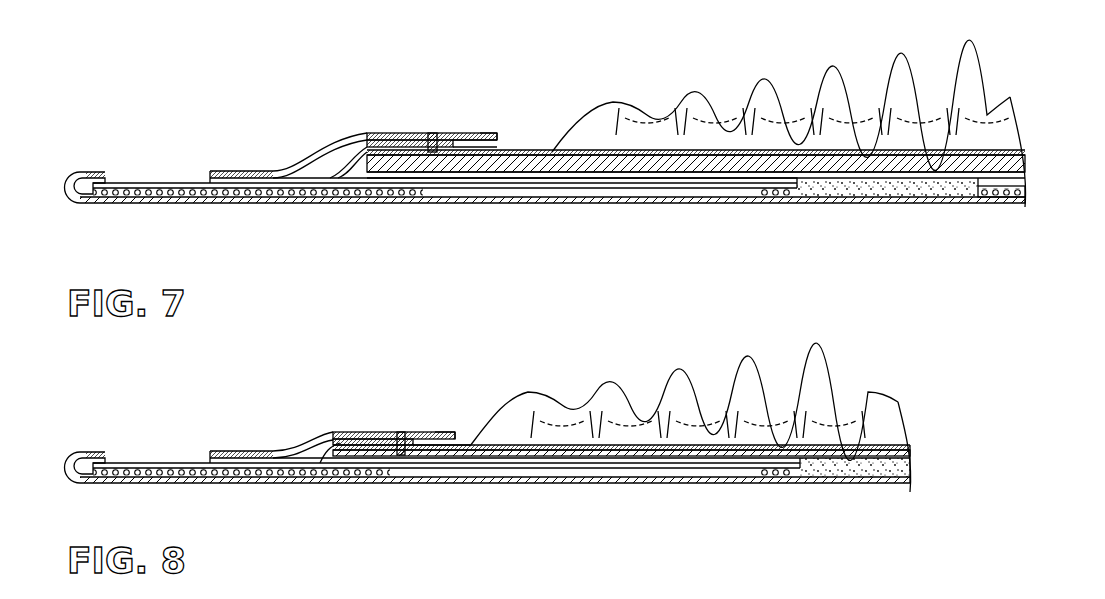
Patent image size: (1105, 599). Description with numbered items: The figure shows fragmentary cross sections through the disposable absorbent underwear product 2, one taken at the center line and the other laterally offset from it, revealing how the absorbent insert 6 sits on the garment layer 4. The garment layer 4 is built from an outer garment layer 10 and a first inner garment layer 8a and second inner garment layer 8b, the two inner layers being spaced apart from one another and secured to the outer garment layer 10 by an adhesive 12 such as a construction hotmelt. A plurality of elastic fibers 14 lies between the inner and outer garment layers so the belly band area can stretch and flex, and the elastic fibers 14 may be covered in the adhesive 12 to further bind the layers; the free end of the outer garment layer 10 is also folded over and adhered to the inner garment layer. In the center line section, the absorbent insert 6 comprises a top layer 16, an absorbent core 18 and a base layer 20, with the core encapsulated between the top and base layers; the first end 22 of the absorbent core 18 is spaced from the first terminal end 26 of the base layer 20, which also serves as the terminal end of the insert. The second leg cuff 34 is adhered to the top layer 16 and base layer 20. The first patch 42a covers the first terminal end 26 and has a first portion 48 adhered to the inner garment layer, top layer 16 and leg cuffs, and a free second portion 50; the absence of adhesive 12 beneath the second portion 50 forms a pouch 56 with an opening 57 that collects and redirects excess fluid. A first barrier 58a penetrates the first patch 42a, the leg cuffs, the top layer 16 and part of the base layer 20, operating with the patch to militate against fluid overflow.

In FIG. 7, the disposable absorbent underwear product 2 is at (153, 167).
In FIG. 8, the disposable absorbent underwear product 2 is at (153, 450).
In FIG. 7, the garment layer 4 is at (822, 202).
In FIG. 8, the garment layer 4 is at (668, 486).
In FIG. 7, the absorbent insert 6 is at (948, 98).
In FIG. 8, the absorbent insert 6 is at (836, 395).
In FIG. 7, the first inner garment layer 8a is at (132, 182).
In FIG. 8, the first inner garment layer 8a is at (132, 462).
In FIG. 7, the second inner garment layer 8b is at (1026, 184).
In FIG. 7, the outer garment layer 10 is at (131, 204).
In FIG. 8, the outer garment layer 10 is at (352, 486).
In FIG. 7, the adhesive 12 is at (233, 180).
In FIG. 8, the adhesive 12 is at (233, 462).
In FIG. 7, the elastic fibers 14 is at (278, 202).
In FIG. 8, the elastic fibers 14 is at (278, 486).
In FIG. 7, the top layer 16 is at (546, 150).
In FIG. 8, the top layer 16 is at (352, 443).
In FIG. 7, the absorbent core 18 is at (815, 172).
In FIG. 7, the base layer 20 is at (406, 184).
In FIG. 8, the base layer 20 is at (633, 458).
In FIG. 7, the first end of the absorbent core 22 is at (372, 163).
In FIG. 7, the first terminal end of the base layer 26 is at (330, 181).
In FIG. 8, the first terminal end of the base layer 26 is at (320, 466).
In FIG. 7, the second leg cuff 34 is at (676, 102).
In FIG. 8, the second leg cuff 34 is at (736, 450).
In FIG. 7, the first patch 42a is at (370, 140).
In FIG. 8, the first patch 42a is at (367, 440).
In FIG. 7, the first portion of the patch 48 is at (328, 134).
In FIG. 8, the first portion of the patch 48 is at (290, 438).
In FIG. 7, the second portion of the patch 50 is at (473, 130).
In FIG. 8, the second portion of the patch 50 is at (472, 437).
In FIG. 7, the pouch 56 is at (496, 128).
In FIG. 8, the pouch 56 is at (433, 436).
In FIG. 7, the opening of the pouch 57 is at (503, 142).
In FIG. 8, the opening of the pouch 57 is at (458, 444).
In FIG. 7, the first barrier 58a is at (436, 132).
In FIG. 8, the first barrier 58a is at (403, 433).